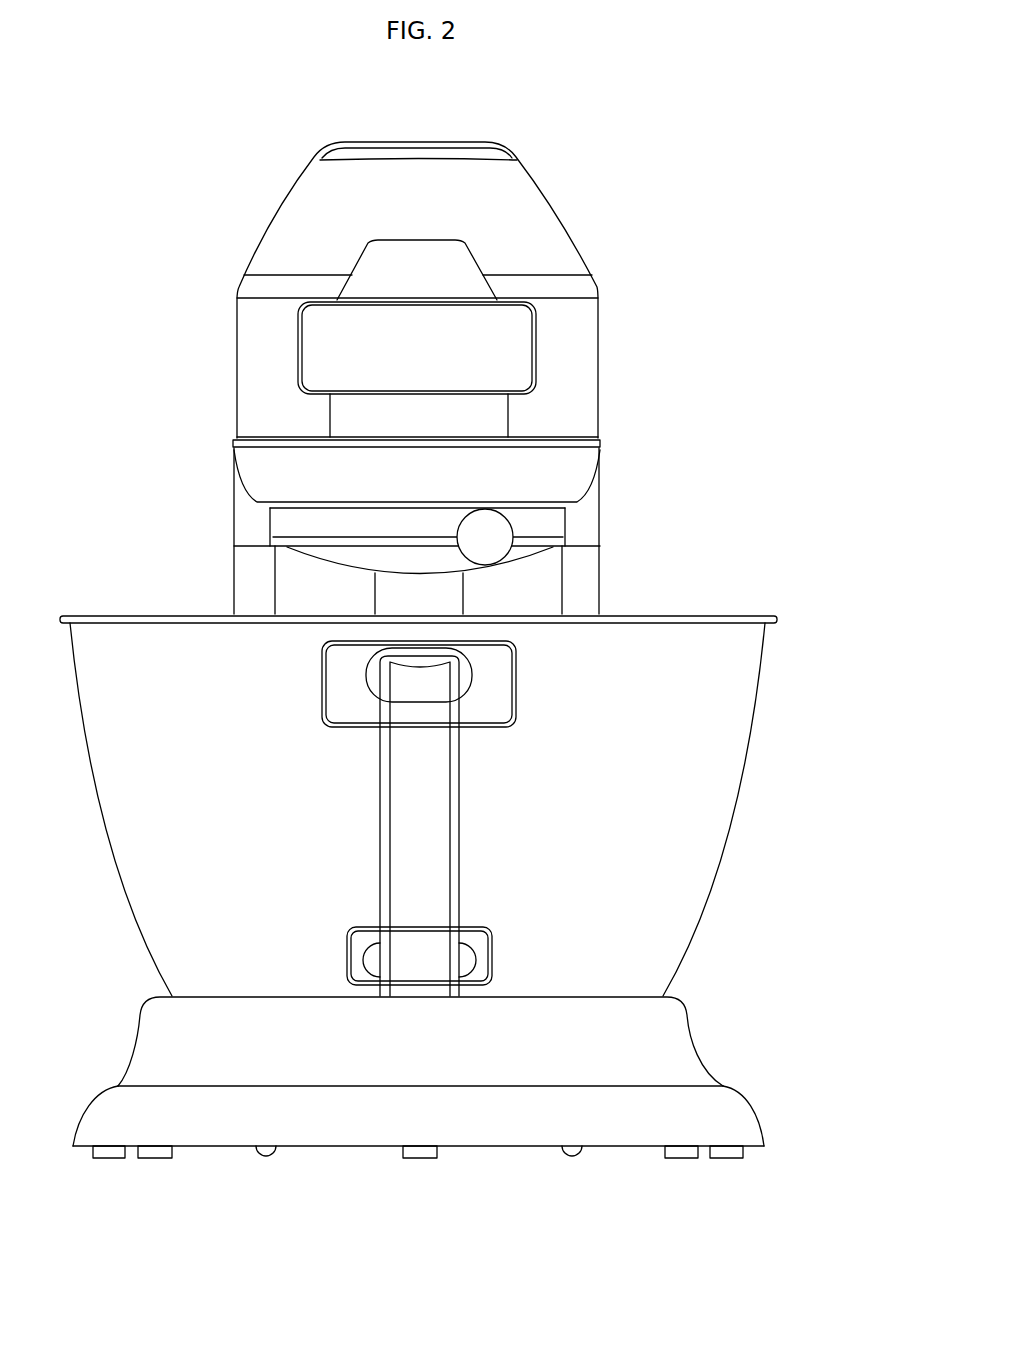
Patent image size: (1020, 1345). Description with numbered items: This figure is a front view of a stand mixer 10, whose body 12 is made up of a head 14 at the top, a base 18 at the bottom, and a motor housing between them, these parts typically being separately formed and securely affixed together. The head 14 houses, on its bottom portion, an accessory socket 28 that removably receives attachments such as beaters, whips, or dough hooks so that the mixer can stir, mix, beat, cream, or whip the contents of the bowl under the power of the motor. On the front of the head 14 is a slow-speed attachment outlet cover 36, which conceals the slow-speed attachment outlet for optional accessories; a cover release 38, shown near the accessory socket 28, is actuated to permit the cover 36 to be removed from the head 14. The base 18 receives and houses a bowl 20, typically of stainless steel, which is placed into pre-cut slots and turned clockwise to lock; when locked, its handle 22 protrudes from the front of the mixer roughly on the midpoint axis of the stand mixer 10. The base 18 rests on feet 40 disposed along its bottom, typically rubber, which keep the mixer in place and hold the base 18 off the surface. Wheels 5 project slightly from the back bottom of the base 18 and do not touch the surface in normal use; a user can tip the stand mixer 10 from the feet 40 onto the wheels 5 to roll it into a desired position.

The stand mixer 10 is at (822, 393).
The body 12 is at (571, 350).
The head 14 is at (512, 198).
The slow-speed attachment outlet cover 36 is at (448, 272).
The slow-speed attachment outlet cover release 38 is at (487, 530).
The accessory socket 28 is at (443, 592).
The bowl 20 is at (673, 837).
The handle 22 is at (425, 800).
The base 18 is at (678, 1052).
The feet 40 is at (157, 1158).
The wheel 5 is at (267, 1156).